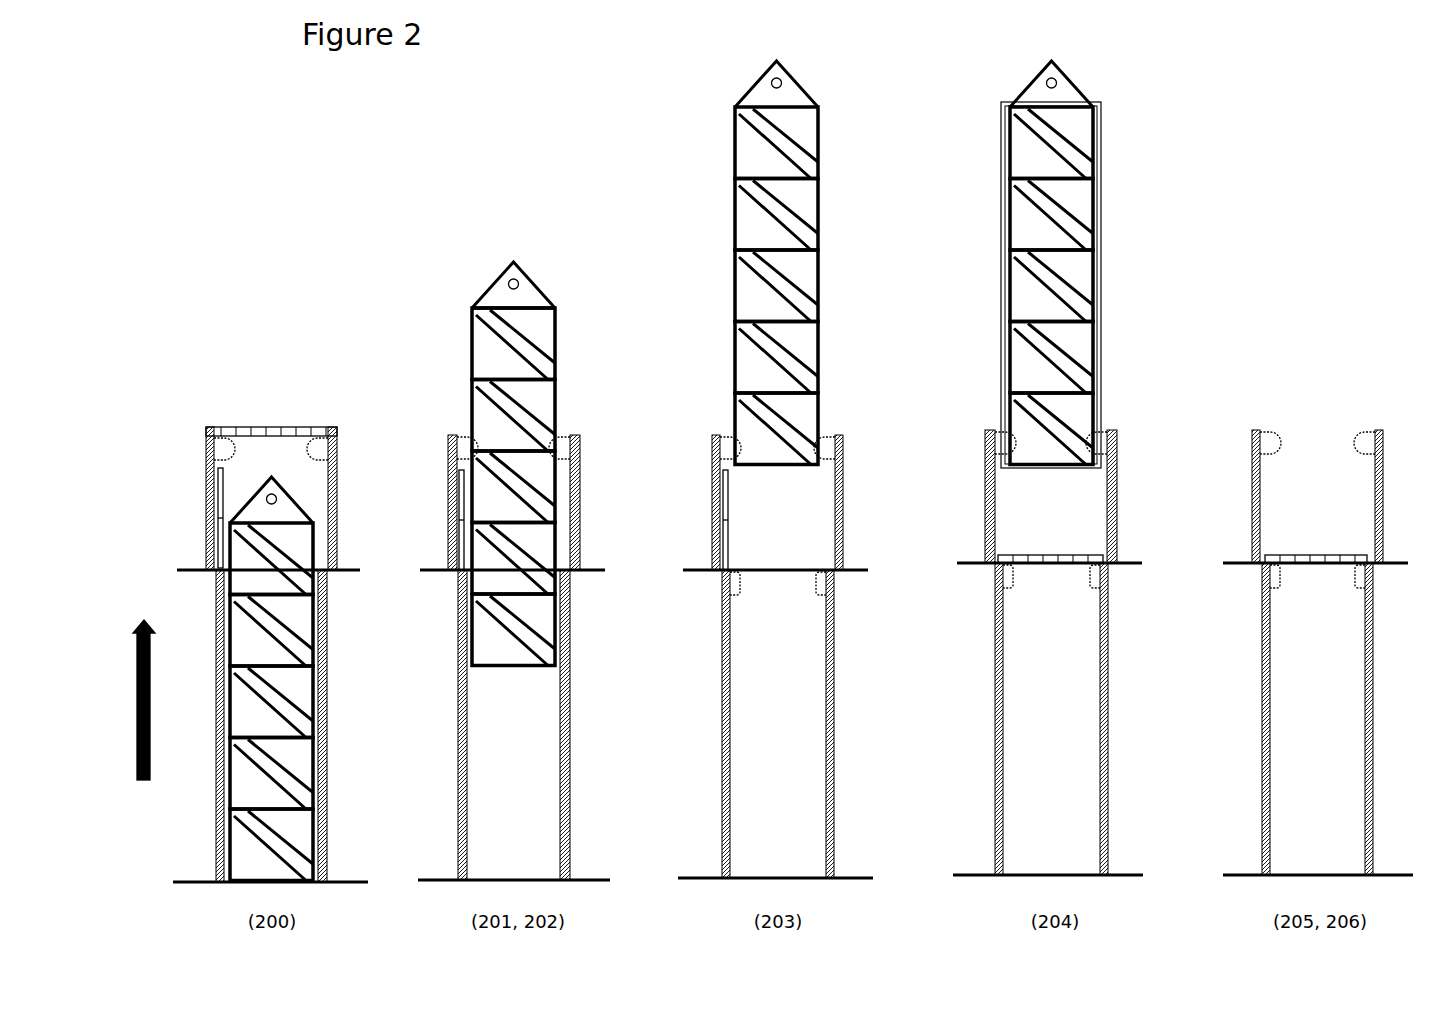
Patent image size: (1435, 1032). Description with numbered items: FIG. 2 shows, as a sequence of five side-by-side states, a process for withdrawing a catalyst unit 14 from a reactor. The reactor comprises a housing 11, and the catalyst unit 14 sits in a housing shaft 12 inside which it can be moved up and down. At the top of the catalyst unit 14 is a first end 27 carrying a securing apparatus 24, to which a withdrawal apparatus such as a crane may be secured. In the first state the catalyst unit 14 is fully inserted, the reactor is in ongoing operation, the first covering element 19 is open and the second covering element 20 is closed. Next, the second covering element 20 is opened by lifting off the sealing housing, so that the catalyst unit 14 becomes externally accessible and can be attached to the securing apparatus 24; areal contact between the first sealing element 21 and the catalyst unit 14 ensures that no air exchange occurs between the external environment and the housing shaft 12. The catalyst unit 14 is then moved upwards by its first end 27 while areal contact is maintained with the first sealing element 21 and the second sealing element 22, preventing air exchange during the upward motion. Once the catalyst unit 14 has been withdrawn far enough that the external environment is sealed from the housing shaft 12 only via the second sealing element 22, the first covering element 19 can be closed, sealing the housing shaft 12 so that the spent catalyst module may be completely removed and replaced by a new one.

The housing 11 is at (195, 570).
The housing shaft 12 is at (490, 795).
The catalyst unit 14 is at (1103, 262).
The first covering element 19 is at (447, 495).
The second covering element 20 is at (300, 432).
The first sealing element 21 is at (332, 580).
The second sealing element 22 is at (208, 427).
The securing apparatus 24 is at (530, 290).
The first end 27 is at (500, 308).